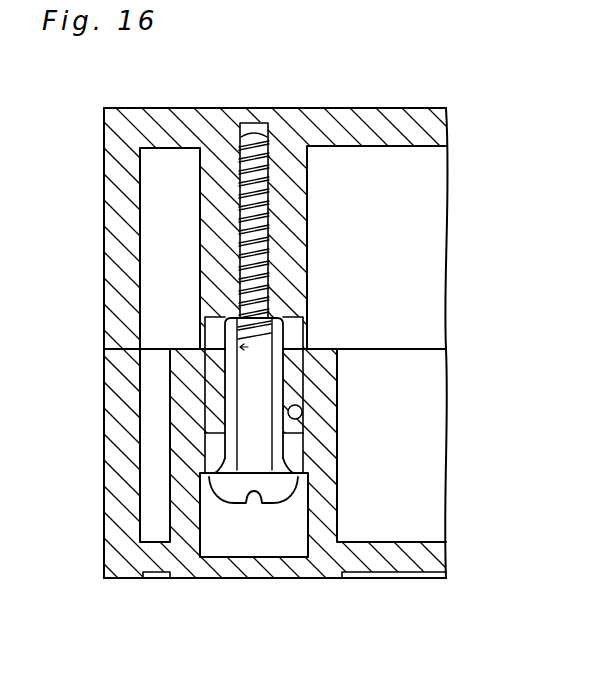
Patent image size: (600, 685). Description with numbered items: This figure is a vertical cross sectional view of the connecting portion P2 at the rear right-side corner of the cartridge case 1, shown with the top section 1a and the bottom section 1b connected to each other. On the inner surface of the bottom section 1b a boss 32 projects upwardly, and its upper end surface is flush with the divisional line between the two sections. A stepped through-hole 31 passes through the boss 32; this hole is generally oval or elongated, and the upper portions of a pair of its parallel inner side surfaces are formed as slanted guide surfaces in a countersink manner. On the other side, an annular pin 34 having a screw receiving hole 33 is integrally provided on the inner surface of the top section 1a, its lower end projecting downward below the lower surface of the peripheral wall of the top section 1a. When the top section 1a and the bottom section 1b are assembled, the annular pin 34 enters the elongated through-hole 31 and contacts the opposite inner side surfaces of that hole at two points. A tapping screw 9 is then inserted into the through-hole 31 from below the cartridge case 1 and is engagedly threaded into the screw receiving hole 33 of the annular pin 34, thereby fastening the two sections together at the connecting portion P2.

The cartridge case 1 is at (103, 135).
The top section 1a is at (402, 116).
The bottom section 1b is at (397, 560).
The connecting portion P2 is at (197, 239).
The screw receiving hole 33 is at (258, 121).
The annular pin 34 is at (296, 311).
The stepped through-hole 31 is at (302, 409).
The boss 32 is at (326, 442).
The tapping screw 9 is at (236, 492).